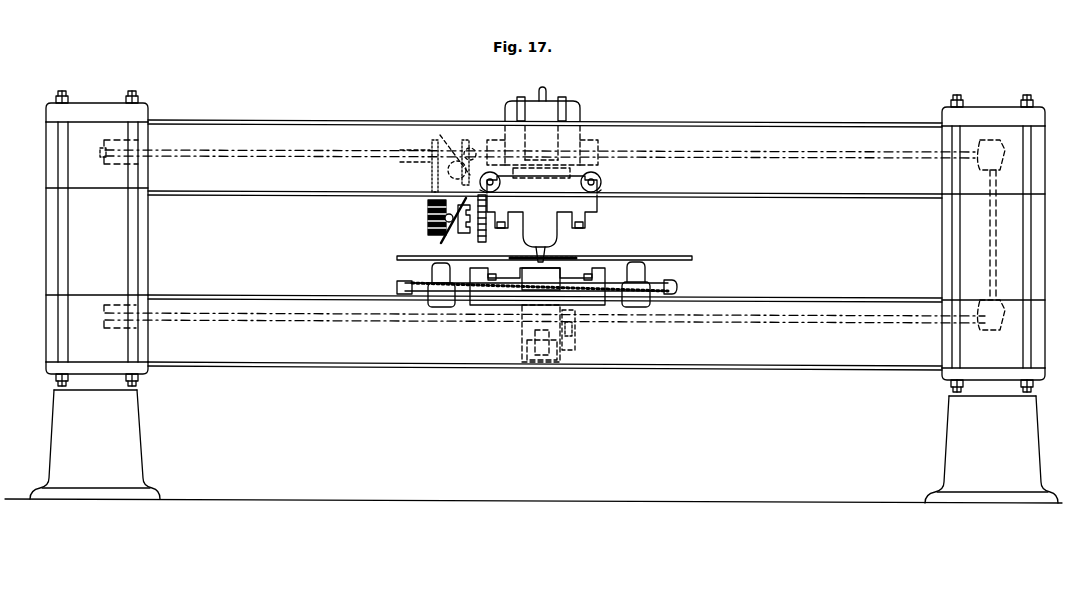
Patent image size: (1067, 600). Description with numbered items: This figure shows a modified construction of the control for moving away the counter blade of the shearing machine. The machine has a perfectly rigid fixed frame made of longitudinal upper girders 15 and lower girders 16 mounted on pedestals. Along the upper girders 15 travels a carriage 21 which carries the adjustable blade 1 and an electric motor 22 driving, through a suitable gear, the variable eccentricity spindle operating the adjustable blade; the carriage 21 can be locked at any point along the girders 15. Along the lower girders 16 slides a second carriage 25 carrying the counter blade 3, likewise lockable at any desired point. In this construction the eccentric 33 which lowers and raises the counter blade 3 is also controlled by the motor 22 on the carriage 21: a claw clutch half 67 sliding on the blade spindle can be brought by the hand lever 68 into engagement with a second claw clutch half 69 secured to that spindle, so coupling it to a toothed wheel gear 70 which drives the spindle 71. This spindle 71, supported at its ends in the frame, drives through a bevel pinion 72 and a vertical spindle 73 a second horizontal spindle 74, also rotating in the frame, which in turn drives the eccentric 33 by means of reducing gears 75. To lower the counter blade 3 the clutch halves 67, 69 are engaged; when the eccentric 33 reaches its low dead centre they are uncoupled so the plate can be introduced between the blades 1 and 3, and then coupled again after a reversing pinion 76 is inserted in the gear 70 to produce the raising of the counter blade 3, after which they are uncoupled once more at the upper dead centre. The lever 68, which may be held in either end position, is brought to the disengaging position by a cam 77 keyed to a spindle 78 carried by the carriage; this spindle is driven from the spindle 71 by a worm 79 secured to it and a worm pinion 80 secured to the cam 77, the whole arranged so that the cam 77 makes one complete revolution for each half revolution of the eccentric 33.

The adjustable blade 1 is at (547, 255).
The counter blade 3 is at (550, 262).
The upper girders 15 is at (545, 159).
The lower girders 16 is at (545, 332).
The carriage 21 is at (542, 221).
The electric motor 22 is at (542, 132).
The second carriage 25 is at (542, 302).
The eccentric 33 is at (523, 341).
The claw clutch half 67 is at (462, 228).
The hand lever 68 is at (433, 235).
The second claw clutch half 69 is at (485, 232).
The toothed wheel gear 70 is at (430, 147).
The spindle 71 is at (196, 150).
The bevel pinion 72 is at (990, 163).
The vertical spindle 73 is at (990, 222).
The second horizontal spindle 74 is at (192, 320).
The reducing gears 75 is at (576, 346).
The reversing pinion 76 is at (430, 163).
The cam 77 is at (443, 138).
The spindle 78 is at (540, 176).
The worm 79 is at (460, 140).
The worm pinion 80 is at (478, 140).